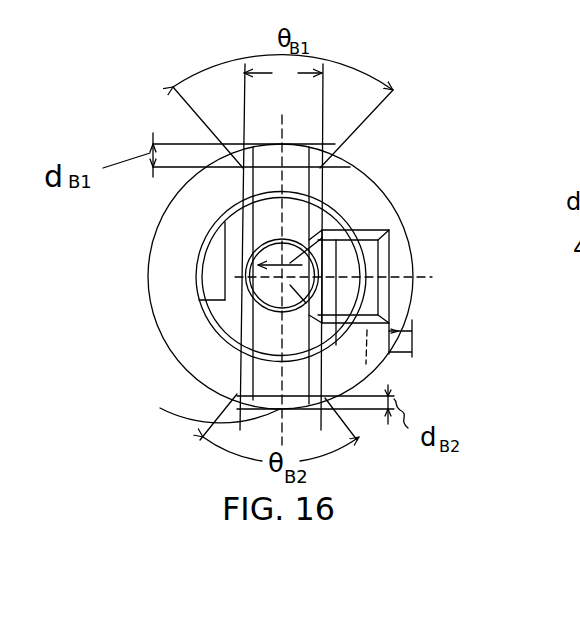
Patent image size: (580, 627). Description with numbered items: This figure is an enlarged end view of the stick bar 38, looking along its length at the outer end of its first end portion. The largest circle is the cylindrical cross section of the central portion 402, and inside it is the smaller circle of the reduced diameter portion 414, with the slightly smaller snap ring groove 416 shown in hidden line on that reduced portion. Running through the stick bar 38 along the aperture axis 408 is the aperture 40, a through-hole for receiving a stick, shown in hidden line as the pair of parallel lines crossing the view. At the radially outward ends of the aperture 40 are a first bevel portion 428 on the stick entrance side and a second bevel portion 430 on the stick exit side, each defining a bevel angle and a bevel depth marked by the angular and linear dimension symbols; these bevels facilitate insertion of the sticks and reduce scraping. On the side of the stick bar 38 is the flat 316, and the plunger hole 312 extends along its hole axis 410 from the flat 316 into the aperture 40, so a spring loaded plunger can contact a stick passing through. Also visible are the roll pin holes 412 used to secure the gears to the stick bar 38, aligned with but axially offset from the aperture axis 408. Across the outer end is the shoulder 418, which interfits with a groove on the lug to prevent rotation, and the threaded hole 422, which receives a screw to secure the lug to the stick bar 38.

The stick bar 38 is at (434, 121).
The aperture 40 is at (245, 369).
The plunger hole 312 is at (373, 366).
The flat surface 316 is at (418, 333).
The central portion 402 is at (391, 201).
The aperture axis 408 is at (286, 122).
The hole axis 410 is at (420, 280).
The roll pin hole 412 is at (258, 333).
The reduced diameter portion 414 is at (199, 252).
The snap ring groove 416 is at (365, 256).
The shoulder 418 is at (199, 299).
The threaded hole 422 is at (289, 283).
The first bevel portion 428 is at (333, 167).
The second bevel portion 430 is at (232, 388).